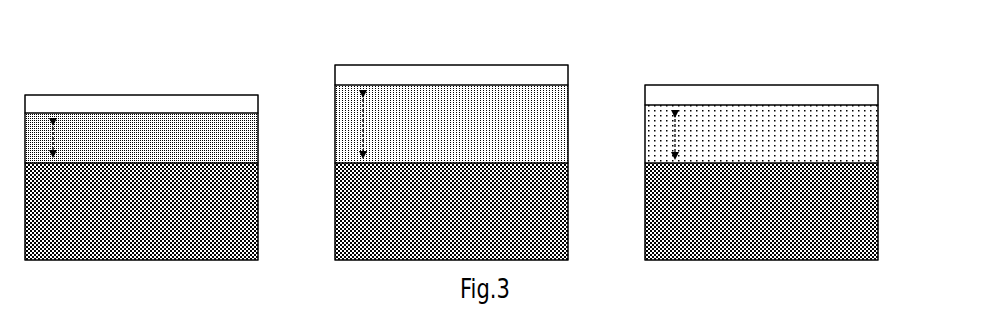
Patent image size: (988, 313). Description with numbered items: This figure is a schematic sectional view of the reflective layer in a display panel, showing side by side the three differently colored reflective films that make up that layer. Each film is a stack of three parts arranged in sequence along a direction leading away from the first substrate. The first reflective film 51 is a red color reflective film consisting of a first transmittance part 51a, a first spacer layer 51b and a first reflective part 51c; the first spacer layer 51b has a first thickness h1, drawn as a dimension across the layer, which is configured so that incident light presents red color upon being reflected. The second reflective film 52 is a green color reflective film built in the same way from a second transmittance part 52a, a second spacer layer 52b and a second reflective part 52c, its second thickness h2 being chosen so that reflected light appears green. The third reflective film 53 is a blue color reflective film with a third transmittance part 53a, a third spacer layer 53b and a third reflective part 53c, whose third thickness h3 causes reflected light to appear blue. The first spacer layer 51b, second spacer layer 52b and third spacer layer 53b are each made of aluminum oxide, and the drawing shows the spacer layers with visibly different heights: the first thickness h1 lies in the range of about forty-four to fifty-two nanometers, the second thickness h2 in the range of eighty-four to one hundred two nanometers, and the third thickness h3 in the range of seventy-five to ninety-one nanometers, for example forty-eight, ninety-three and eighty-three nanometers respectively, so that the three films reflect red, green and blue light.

The first reflective film 51 is at (57, 68).
The first transmittance part 51a is at (238, 105).
The first spacer layer 51b is at (238, 137).
The first reflective part 51c is at (238, 210).
The first thickness h1 is at (67, 138).
The second reflective film 52 is at (369, 40).
The second transmittance part 52a is at (548, 75).
The second spacer layer 52b is at (548, 123).
The second reflective part 52c is at (548, 210).
The second thickness h2 is at (377, 124).
The third reflective film 53 is at (679, 58).
The third transmittance part 53a is at (858, 94).
The third spacer layer 53b is at (858, 133).
The third reflective part 53c is at (858, 210).
The third thickness h3 is at (689, 135).